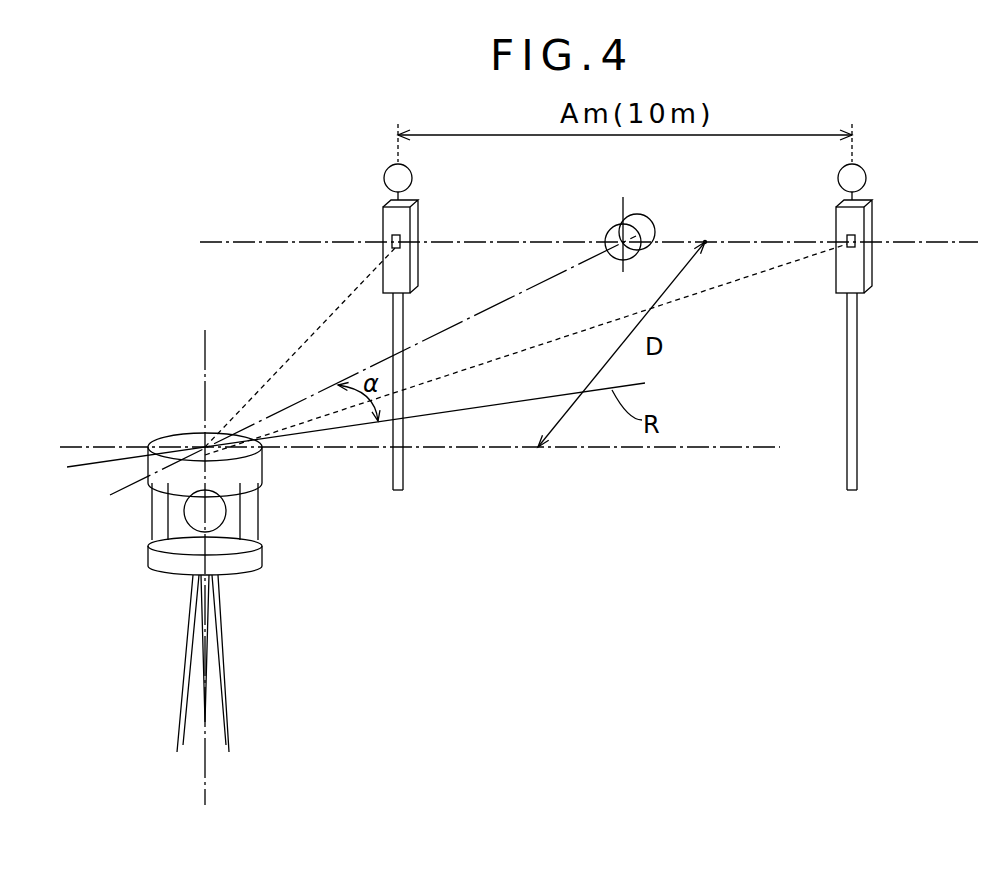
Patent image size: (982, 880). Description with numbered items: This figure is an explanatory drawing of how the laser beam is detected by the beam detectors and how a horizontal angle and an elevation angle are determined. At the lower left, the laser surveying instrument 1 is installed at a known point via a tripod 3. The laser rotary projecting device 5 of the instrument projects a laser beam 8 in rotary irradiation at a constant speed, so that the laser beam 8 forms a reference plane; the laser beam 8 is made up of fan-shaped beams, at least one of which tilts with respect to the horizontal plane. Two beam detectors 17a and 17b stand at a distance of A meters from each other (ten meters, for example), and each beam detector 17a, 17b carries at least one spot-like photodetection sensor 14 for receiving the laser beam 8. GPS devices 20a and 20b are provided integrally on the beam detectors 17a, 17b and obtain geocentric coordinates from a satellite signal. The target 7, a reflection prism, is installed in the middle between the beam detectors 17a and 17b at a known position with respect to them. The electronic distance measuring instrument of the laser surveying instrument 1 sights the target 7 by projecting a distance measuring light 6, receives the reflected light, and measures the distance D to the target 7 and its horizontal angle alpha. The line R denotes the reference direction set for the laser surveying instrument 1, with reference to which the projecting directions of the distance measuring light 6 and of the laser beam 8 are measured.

The laser surveying instrument 1 is at (265, 539).
The tripod 3 is at (222, 641).
The laser rotary projecting device 5 is at (180, 433).
The distance measuring light 6 is at (560, 270).
The target 7 is at (658, 250).
The laser beam 8 is at (266, 320).
The photodetection sensor 14 is at (401, 249).
The beam detector 17a is at (872, 224).
The beam detector 17b is at (380, 225).
The GPS device 20a is at (866, 176).
The GPS device 20b is at (385, 172).